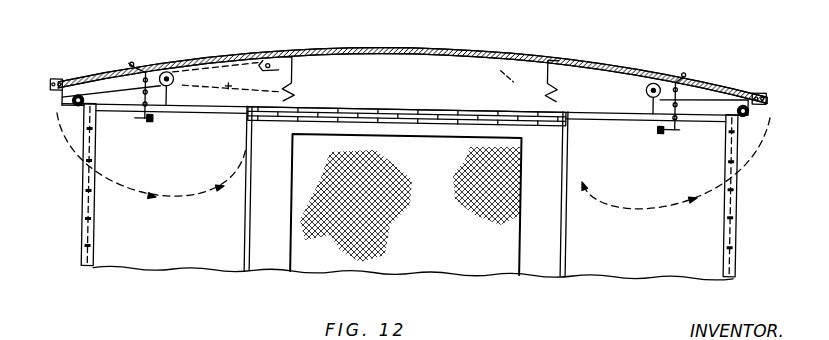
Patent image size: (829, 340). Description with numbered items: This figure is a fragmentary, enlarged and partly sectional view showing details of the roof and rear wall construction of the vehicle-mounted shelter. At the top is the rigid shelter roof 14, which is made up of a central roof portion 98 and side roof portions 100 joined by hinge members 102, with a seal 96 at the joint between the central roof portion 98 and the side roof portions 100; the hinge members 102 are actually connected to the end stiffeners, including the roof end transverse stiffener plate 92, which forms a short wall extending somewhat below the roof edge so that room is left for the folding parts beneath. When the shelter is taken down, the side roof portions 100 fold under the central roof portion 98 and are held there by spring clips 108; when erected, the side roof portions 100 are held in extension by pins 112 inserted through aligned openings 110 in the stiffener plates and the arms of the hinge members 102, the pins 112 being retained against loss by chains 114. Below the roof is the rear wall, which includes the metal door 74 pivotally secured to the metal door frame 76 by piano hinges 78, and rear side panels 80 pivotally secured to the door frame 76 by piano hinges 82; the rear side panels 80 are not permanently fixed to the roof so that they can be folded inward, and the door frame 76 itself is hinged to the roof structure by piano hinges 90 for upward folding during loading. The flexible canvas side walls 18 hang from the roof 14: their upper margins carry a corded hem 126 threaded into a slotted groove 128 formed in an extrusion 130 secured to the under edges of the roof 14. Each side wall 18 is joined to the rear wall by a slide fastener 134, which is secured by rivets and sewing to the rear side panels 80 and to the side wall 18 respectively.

The rigid shelter roof 14 is at (398, 50).
The side walls 18 is at (82, 204).
The metal door 74 is at (433, 228).
The metal door frame 76 is at (257, 200).
The piano hinges 78 is at (560, 224).
The rear side panels 80 is at (171, 146).
The piano hinges 82 is at (246, 237).
The piano hinges 90 is at (388, 105).
The roof end transverse stiffener plate 92 is at (455, 90).
The seal 96 is at (143, 68).
The central roof portion 98 is at (499, 57).
The side roof portions 100 is at (108, 83).
The hinge members 102 is at (110, 80).
The spring clips 108 is at (306, 82).
The aligned openings 110 is at (171, 86).
The pins 112 is at (137, 122).
The chains 114 is at (147, 66).
The corded hem 126 is at (79, 108).
The slotted groove 128 is at (81, 150).
The extrusion 130 is at (52, 110).
The slide fastener 134 is at (85, 240).